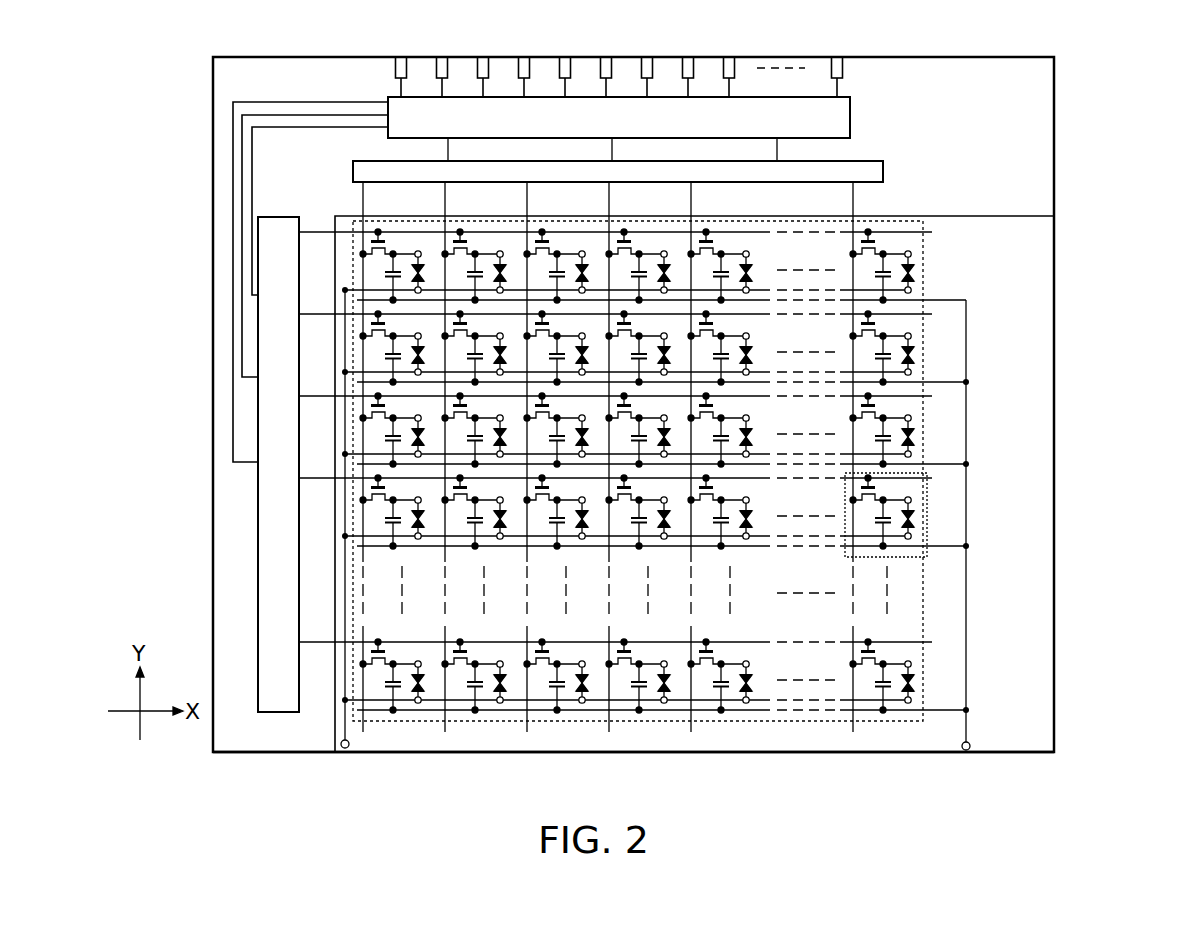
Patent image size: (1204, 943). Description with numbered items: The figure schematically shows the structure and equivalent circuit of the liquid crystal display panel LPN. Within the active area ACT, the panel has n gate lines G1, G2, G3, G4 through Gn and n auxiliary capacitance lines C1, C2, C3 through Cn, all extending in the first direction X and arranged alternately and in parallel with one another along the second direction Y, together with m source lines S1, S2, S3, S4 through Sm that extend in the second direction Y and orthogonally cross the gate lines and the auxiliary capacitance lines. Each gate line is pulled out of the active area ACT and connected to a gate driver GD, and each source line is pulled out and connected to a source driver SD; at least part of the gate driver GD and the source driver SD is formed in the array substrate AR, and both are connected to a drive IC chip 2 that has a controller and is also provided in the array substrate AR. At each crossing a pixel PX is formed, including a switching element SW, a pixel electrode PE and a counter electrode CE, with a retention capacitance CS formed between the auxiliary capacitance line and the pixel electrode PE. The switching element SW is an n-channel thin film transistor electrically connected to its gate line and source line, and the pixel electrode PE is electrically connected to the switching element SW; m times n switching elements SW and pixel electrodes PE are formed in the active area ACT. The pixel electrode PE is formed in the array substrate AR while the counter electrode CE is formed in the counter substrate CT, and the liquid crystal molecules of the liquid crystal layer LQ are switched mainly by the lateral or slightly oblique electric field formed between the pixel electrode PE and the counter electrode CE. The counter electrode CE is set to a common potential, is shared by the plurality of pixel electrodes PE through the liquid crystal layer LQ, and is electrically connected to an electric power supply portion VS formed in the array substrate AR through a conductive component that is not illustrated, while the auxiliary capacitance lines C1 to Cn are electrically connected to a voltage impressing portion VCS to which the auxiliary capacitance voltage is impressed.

The liquid crystal display panel LPN is at (1092, 72).
The drive IC chip 2 is at (850, 96).
The source driver SD is at (885, 171).
The gate driver GD is at (258, 578).
The counter substrate CT is at (1027, 216).
The active area ACT is at (925, 334).
The array substrate AR is at (275, 753).
The gate line G1 is at (318, 232).
The gate line G2 is at (318, 314).
The gate line G3 is at (318, 396).
The gate line G4 is at (318, 478).
The gate line Gn is at (318, 642).
The source line S1 is at (365, 200).
The source line S2 is at (447, 200).
The source line S3 is at (529, 200).
The source line S4 is at (611, 200).
The source line Sm is at (855, 200).
The auxiliary capacitance line C1 is at (948, 299).
The auxiliary capacitance line C2 is at (948, 381).
The auxiliary capacitance line C3 is at (948, 463).
The auxiliary capacitance line Cn is at (943, 709).
The electric power supply portion VS is at (349, 749).
The voltage impressing portion VCS is at (970, 744).
The pixel PX is at (903, 519).
The switching element SW is at (841, 495).
The retention capacitance CS is at (861, 524).
The pixel electrode PE is at (913, 495).
The liquid crystal layer LQ is at (914, 516).
The counter electrode CE is at (913, 531).